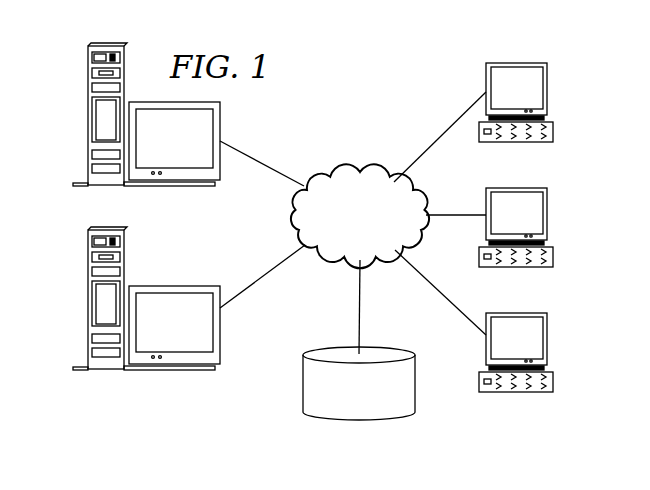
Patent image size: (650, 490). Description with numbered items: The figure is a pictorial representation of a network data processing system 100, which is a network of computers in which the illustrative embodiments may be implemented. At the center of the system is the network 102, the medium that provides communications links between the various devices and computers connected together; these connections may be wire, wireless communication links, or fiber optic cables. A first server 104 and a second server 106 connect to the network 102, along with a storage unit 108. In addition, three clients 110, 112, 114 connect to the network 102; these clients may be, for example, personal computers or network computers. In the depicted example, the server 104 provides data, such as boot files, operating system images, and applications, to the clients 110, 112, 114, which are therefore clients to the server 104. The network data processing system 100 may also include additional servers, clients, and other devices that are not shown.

The network data processing system 100 is at (401, 75).
The network 102 is at (334, 172).
The server 104 is at (88, 114).
The server 106 is at (88, 300).
The storage unit 108 is at (343, 420).
The client 110 is at (548, 90).
The client 112 is at (548, 215).
The client 114 is at (548, 340).